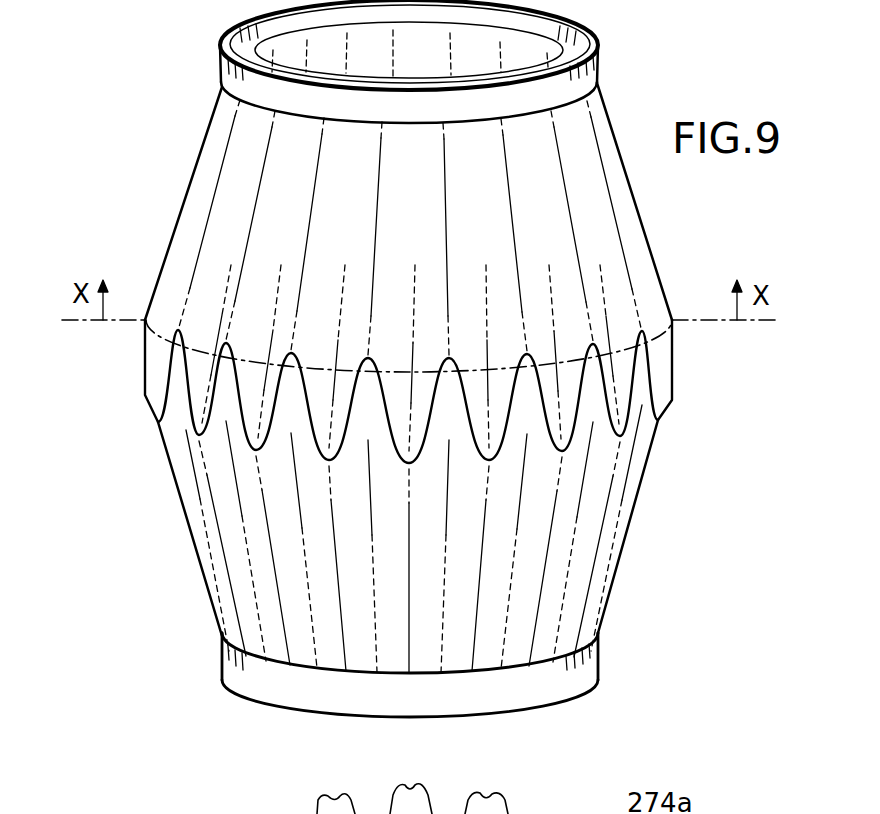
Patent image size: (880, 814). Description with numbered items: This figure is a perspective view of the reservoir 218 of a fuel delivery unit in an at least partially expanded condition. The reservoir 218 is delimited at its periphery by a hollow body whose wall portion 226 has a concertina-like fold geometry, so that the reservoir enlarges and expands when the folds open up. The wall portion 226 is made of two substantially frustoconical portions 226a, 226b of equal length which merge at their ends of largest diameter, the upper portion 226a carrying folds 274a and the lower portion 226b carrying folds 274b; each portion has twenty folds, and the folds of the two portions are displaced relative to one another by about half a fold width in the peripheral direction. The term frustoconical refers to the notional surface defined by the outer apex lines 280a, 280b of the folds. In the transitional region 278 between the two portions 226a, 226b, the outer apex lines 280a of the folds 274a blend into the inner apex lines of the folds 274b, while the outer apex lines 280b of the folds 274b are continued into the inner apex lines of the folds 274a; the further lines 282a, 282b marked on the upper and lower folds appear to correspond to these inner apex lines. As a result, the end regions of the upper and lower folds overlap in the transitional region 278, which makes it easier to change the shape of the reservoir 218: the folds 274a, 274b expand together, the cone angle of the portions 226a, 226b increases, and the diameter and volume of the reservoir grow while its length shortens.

The reservoir 218 is at (670, 501).
The wall portion 226 is at (654, 209).
The upper frustoconical portion 226a is at (174, 232).
The lower frustoconical portion 226b is at (203, 583).
The folds of the upper portion 274a is at (278, 170).
The folds of the lower portion 274b is at (232, 552).
The transitional region 278 is at (72, 332).
The outer apex lines of the upper folds 280a is at (317, 223).
The outer apex lines of the lower folds 280b is at (545, 560).
The upper fold lines 282a is at (280, 282).
The lower fold lines 282b is at (314, 612).